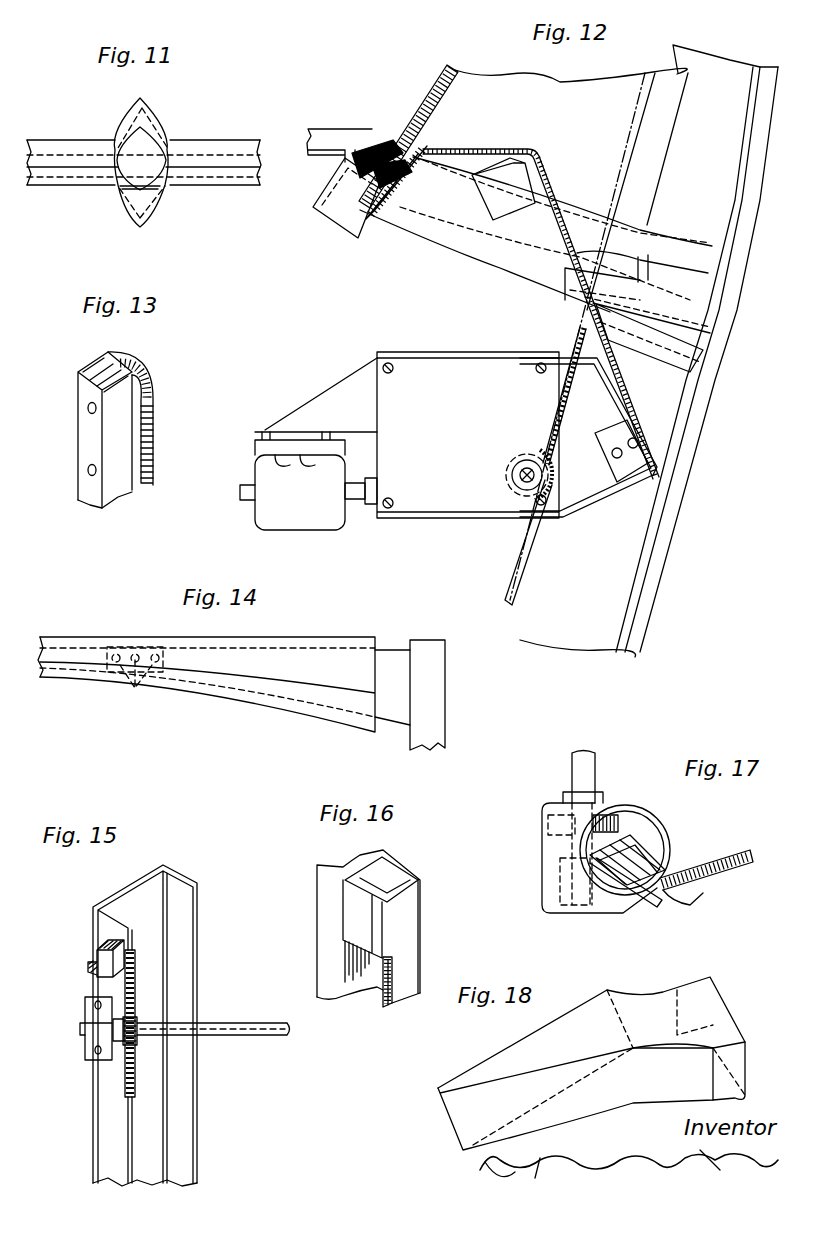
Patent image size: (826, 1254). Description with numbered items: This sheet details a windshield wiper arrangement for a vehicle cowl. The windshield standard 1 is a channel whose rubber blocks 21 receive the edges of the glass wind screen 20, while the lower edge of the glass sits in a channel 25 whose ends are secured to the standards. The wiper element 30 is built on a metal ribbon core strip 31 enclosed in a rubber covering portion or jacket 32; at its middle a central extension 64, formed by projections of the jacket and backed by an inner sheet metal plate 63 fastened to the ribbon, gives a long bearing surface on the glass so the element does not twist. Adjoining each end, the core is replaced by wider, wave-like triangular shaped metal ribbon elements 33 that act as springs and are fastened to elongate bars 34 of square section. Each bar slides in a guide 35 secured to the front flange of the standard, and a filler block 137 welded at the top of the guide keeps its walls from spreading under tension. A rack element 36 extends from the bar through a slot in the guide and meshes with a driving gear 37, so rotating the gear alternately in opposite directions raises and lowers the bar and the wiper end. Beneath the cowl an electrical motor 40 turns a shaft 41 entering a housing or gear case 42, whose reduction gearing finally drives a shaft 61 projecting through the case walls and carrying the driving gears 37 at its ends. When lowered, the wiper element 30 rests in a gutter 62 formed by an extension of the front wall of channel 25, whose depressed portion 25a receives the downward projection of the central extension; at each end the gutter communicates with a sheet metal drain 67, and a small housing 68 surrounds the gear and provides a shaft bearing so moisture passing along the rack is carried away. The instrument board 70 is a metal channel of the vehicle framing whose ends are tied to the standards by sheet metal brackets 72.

In FIG. 12, the windshield standard 1 is at (680, 526).
In FIG. 17, the windshield standard 1 is at (737, 885).
In FIG. 12, the glass wind screen 20 is at (568, 73).
In FIG. 12, the rubber blocks 21 is at (718, 205).
In FIG. 12, the channel 25 is at (363, 223).
In FIG. 12, the depressed portion 25a is at (340, 210).
In FIG. 12, the wiper element 30 is at (385, 136).
In FIG. 14, the wiper element 30 is at (183, 689).
In FIG. 11, the core strip 31 is at (226, 152).
In FIG. 14, the core strip 31 is at (80, 672).
In FIG. 11, the covering portion or jacket 32 is at (188, 146).
In FIG. 12, the covering portion or jacket 32 is at (378, 125).
In FIG. 14, the triangular shaped metal ribbon elements 33 is at (388, 650).
In FIG. 13, the elongate bars 34 is at (88, 443).
In FIG. 14, the elongate bars 34 is at (134, 686).
In FIG. 15, the elongate bars 34 is at (100, 950).
In FIG. 17, the elongate bars 34 is at (640, 868).
In FIG. 15, the guides 35 is at (97, 983).
In FIG. 16, the guides 35 is at (400, 915).
In FIG. 17, the guides 35 is at (633, 888).
In FIG. 12, the rack element 36 is at (553, 412).
In FIG. 13, the rack element 36 is at (153, 433).
In FIG. 15, the rack element 36 is at (135, 962).
In FIG. 17, the rack element 36 is at (625, 812).
In FIG. 12, the driving gear 37 is at (523, 452).
In FIG. 15, the driving gear 37 is at (133, 1043).
In FIG. 17, the driving gear 37 is at (550, 806).
In FIG. 12, the electrical motor 40 is at (263, 510).
In FIG. 12, the shaft 41 is at (360, 507).
In FIG. 12, the housing or gear case 42 is at (448, 368).
In FIG. 12, the shaft 61 is at (520, 480).
In FIG. 15, the shaft 61 is at (267, 1023).
In FIG. 17, the shaft 61 is at (577, 768).
In FIG. 12, the gutter 62 is at (350, 180).
In FIG. 11, the inner sheet metal plate 63 is at (160, 198).
In FIG. 11, the central extension 64 is at (128, 113).
In FIG. 12, the central extension 64 is at (382, 127).
In FIG. 12, the sheet metal drain 67 is at (578, 322).
In FIG. 17, the sheet metal drain 67 is at (633, 808).
In FIG. 17, the housing 68 is at (548, 848).
In FIG. 12, the instrument board 70 is at (628, 421).
In FIG. 12, the sheet metal brackets 72 is at (673, 358).
In FIG. 18, the sheet metal brackets 72 is at (553, 1030).
In FIG. 16, the filler block 137 is at (368, 875).